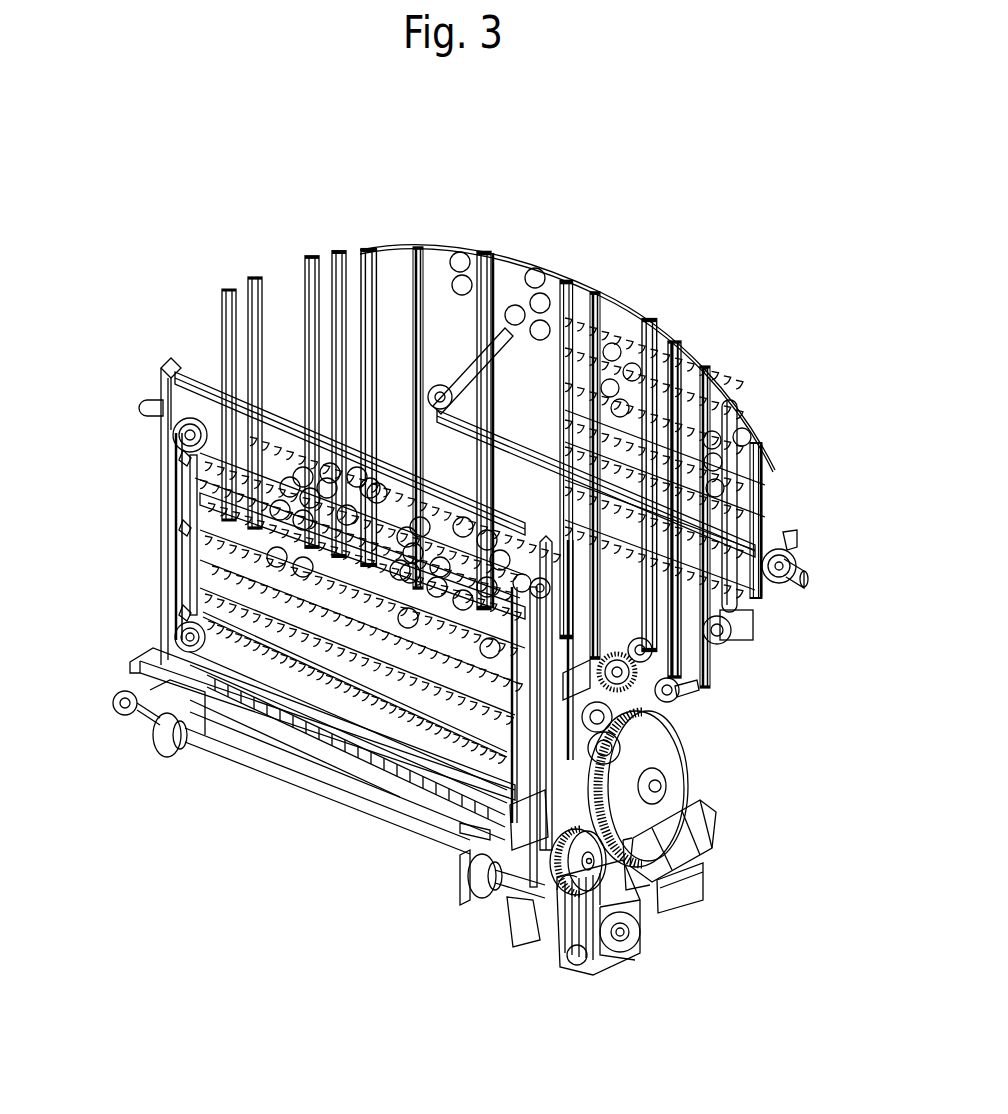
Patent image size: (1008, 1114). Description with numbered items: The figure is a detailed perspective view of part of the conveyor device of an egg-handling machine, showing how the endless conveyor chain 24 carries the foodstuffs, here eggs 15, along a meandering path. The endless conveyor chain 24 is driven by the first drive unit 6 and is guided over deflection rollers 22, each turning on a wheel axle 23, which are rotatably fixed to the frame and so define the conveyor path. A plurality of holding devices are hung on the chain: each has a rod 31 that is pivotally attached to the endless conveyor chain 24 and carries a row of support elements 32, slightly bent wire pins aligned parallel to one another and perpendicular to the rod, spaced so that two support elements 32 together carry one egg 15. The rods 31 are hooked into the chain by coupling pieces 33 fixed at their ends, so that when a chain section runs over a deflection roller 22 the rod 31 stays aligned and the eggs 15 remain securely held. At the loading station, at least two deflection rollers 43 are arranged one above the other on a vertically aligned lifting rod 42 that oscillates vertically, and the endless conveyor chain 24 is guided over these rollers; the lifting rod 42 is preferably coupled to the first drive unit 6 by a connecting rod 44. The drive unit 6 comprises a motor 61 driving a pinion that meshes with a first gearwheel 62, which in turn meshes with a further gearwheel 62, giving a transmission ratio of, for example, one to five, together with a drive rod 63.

The first drive unit 6 is at (716, 849).
The egg 15 is at (410, 613).
The deflection roller 22 is at (787, 535).
The wheel axle 23 is at (788, 582).
The endless conveyor chain 24 is at (308, 305).
The rod 31 is at (345, 610).
The support element 32 is at (307, 597).
The coupling piece 33 is at (180, 535).
The lifting rod 42 is at (165, 477).
The deflection roller 43 is at (183, 433).
The connecting rod 44 is at (470, 883).
The motor 61 is at (712, 812).
The gearwheel 62 is at (592, 843).
The drive rod 63 is at (605, 737).